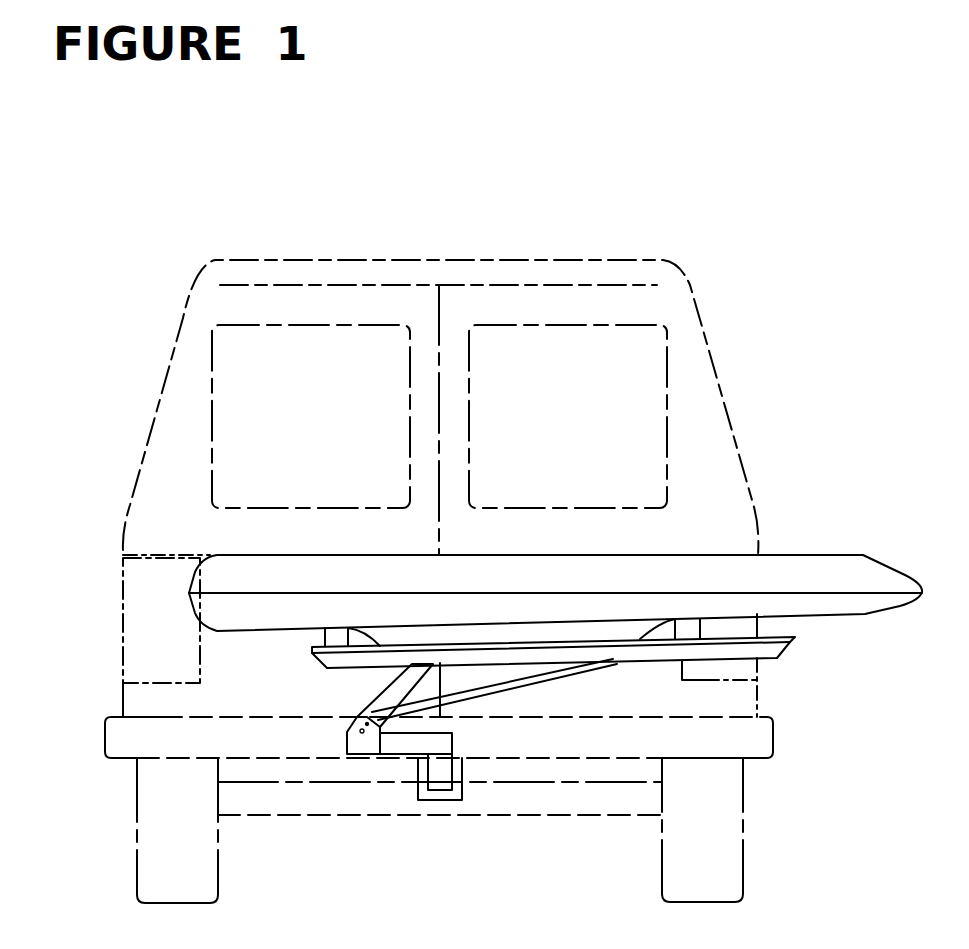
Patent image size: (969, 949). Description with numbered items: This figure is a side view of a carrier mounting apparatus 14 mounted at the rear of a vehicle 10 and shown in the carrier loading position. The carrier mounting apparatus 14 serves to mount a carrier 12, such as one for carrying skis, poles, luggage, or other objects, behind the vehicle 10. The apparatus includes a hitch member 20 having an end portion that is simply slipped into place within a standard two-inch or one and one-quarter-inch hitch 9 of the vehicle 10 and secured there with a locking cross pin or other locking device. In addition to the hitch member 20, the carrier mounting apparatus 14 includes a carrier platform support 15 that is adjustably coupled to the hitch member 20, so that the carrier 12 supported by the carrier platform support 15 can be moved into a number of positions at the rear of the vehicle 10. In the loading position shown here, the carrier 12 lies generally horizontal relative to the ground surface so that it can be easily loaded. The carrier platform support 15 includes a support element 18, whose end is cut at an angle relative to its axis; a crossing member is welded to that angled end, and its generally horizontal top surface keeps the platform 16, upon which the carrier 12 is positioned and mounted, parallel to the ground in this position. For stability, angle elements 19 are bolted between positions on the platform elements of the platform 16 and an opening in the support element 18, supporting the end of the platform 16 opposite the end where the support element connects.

The hitch 9 is at (447, 800).
The vehicle 10 is at (723, 388).
The carrier 12 is at (777, 555).
The carrier mounting apparatus 14 is at (483, 738).
The carrier platform support 15 is at (611, 670).
The platform 16 is at (795, 640).
The support element 18 is at (390, 693).
The angle elements 19 is at (537, 683).
The hitch member 20 is at (403, 758).